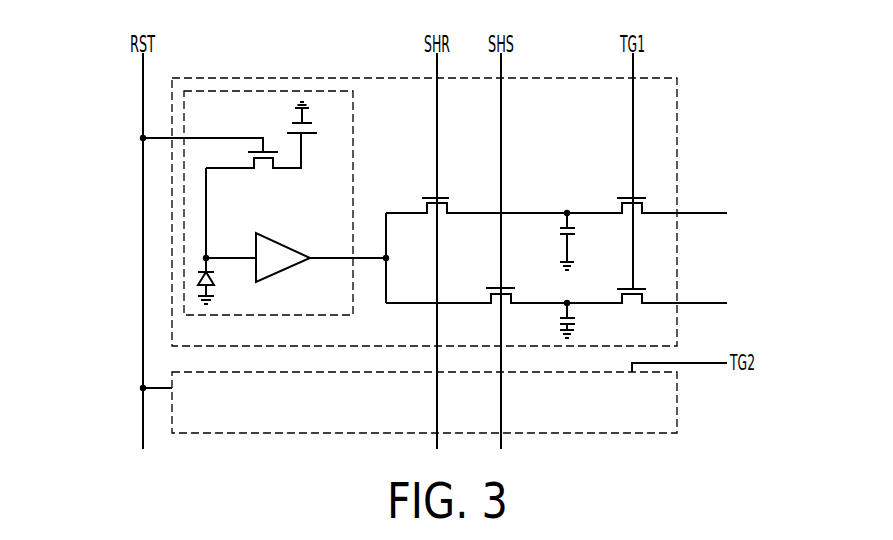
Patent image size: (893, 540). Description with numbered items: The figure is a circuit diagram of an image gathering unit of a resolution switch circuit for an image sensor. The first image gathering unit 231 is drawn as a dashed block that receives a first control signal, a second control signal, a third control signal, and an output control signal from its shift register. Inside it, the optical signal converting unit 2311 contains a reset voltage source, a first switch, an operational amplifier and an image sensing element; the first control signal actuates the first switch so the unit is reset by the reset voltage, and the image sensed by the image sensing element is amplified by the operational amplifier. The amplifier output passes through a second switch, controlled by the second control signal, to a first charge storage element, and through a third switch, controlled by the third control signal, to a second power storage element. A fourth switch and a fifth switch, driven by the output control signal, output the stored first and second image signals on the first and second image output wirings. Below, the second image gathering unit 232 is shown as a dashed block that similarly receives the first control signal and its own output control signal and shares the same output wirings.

The first image gathering unit 231 is at (677, 95).
The optical signal converting unit 2311 is at (353, 115).
The second image gathering unit 232 is at (677, 402).